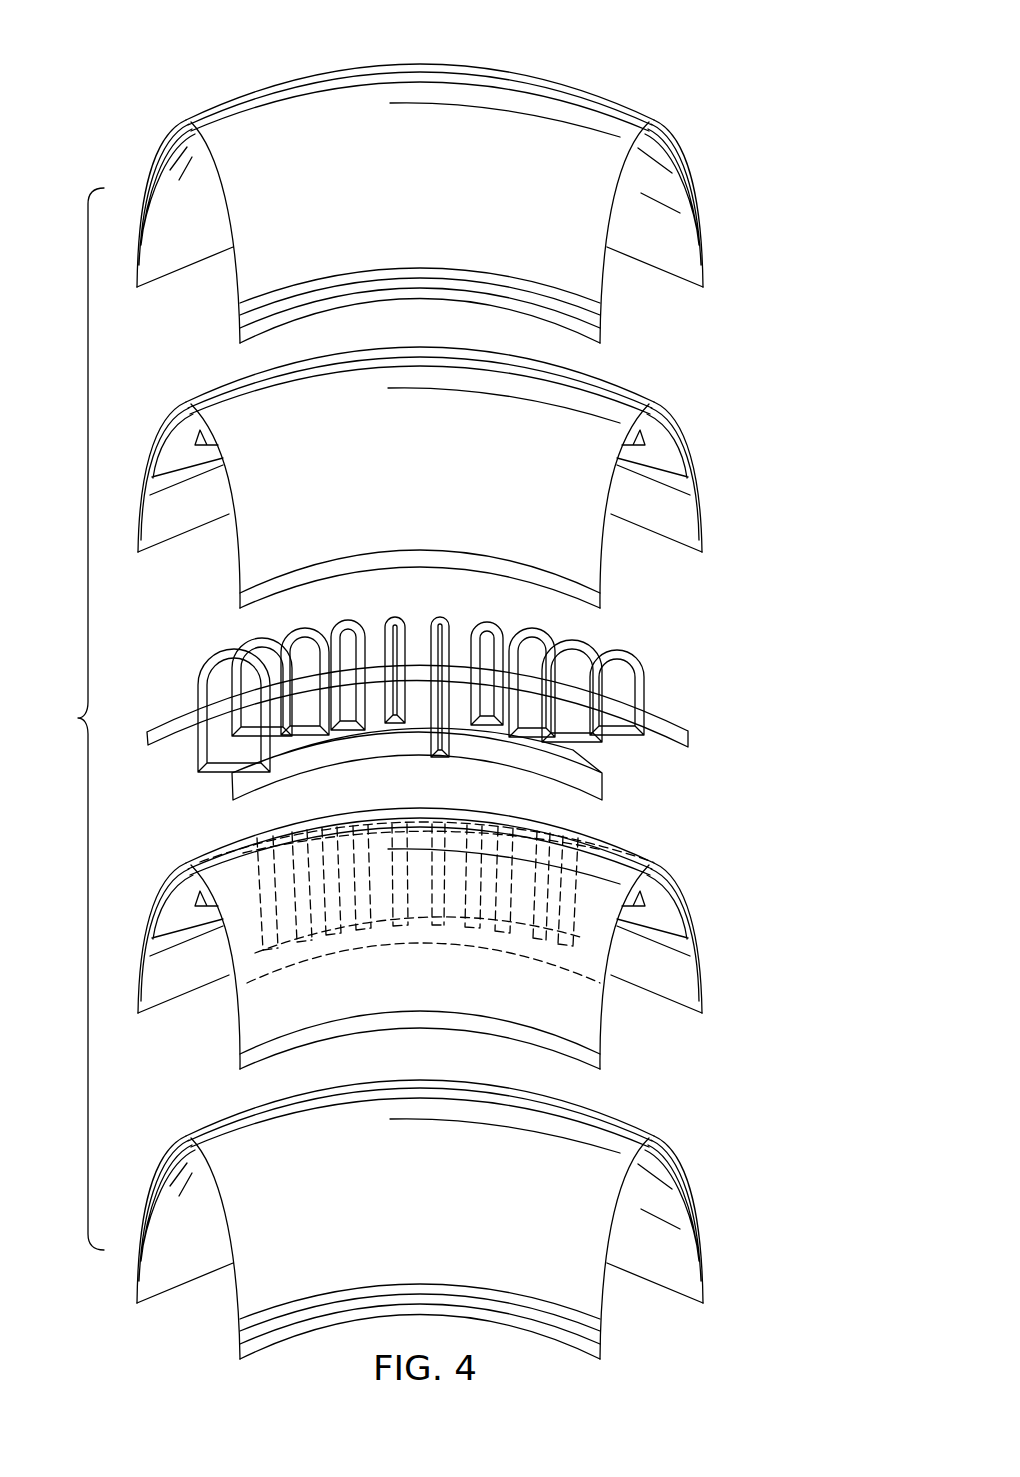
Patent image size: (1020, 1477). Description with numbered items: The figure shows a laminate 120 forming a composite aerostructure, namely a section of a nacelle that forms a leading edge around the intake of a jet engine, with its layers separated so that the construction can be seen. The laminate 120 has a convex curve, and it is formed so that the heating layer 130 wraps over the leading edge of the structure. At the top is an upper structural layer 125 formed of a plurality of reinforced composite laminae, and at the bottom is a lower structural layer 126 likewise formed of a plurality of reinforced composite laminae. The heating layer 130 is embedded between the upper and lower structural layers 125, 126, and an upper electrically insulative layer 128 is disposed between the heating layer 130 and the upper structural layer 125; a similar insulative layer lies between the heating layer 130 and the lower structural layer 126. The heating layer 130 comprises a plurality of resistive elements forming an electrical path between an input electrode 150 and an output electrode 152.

The laminate 120 is at (66, 719).
The upper structural layer 125 is at (542, 78).
The lower structural layer 126 is at (633, 1123).
The upper electrically insulative layer 128 is at (620, 383).
The heating layer 130 is at (652, 681).
The input electrode 150 is at (690, 739).
The output electrode 152 is at (602, 800).